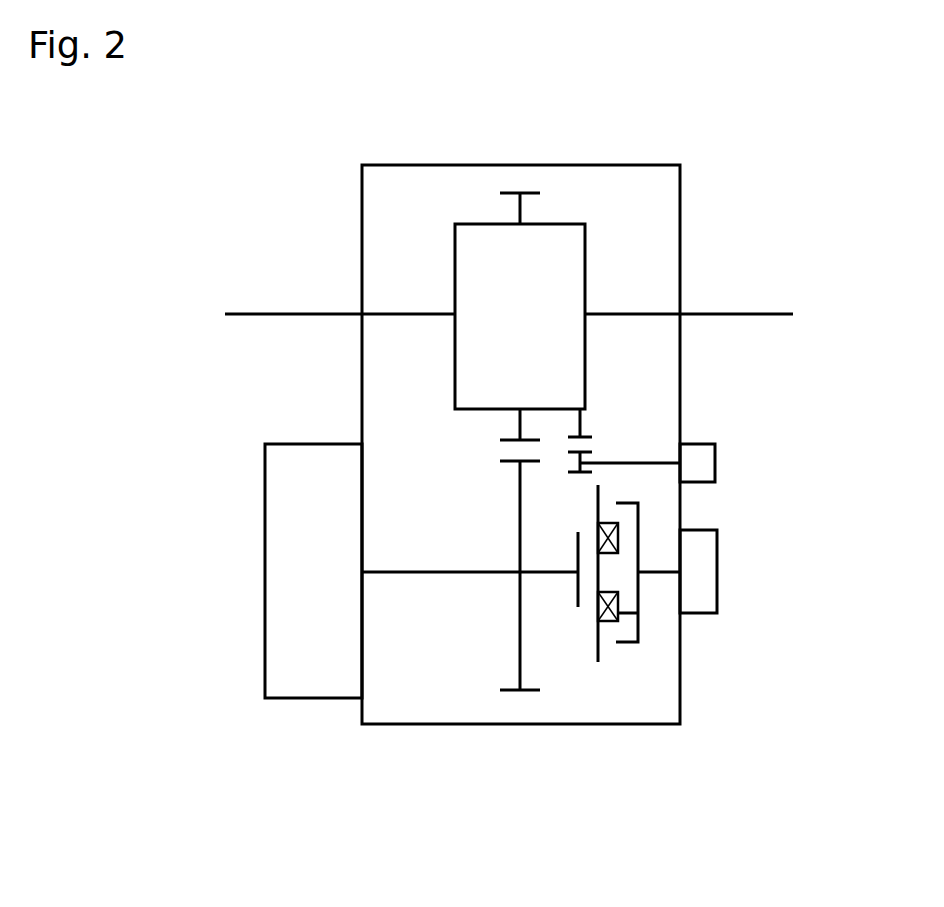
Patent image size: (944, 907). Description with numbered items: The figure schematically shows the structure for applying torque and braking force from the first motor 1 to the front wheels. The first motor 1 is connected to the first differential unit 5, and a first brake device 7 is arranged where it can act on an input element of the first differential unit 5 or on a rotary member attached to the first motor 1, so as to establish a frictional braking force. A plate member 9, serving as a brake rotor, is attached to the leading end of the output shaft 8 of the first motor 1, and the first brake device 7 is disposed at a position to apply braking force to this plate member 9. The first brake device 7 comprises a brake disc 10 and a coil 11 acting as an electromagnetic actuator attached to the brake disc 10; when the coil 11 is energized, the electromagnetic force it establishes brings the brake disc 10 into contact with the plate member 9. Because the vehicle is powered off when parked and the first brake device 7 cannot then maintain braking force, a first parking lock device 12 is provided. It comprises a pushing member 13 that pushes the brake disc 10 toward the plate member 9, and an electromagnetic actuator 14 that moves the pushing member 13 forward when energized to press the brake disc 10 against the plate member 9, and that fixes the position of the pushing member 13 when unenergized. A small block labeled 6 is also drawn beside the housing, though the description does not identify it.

The first motor 1 is at (307, 683).
The first differential unit 5 is at (561, 233).
The output gear 6 is at (702, 463).
The first brake device 7 is at (585, 707).
The output shaft 8 is at (425, 573).
The plate member 9 is at (577, 606).
The brake disc 10 is at (598, 662).
The coil 11 is at (637, 613).
The first parking lock device 12 is at (667, 655).
The pushing member 13 is at (637, 514).
The electromagnetic actuator 14 is at (705, 572).